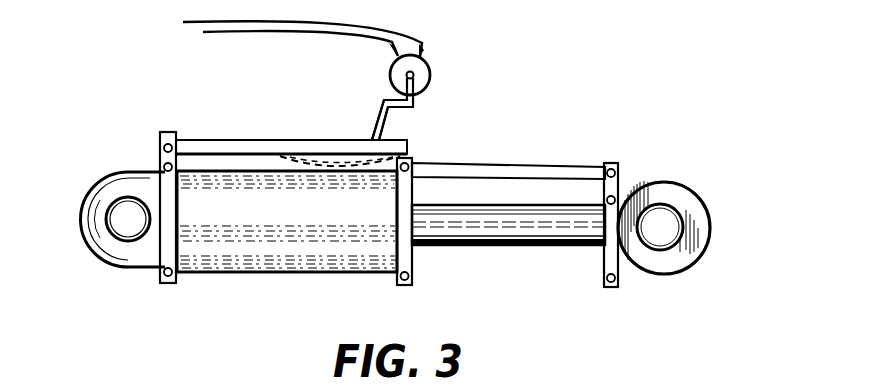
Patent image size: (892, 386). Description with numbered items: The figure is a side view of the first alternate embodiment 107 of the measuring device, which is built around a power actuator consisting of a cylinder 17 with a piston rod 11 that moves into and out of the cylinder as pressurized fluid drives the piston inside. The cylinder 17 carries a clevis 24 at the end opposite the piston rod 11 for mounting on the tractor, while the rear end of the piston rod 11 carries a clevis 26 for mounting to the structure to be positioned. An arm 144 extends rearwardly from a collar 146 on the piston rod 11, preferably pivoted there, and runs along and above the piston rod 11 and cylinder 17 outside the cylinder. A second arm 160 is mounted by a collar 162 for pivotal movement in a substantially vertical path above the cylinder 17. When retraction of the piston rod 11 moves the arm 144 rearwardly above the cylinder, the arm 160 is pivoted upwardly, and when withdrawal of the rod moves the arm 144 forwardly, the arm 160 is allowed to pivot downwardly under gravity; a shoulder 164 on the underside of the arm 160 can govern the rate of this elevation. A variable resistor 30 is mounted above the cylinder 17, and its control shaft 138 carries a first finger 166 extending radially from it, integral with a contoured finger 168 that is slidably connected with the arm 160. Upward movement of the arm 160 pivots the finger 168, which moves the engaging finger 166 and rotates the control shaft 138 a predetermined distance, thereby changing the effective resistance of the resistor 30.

The first alternate embodiment of the measuring device 107 is at (550, 102).
The cylinder 17 is at (346, 274).
The clevis 24 is at (106, 224).
The collar 162 is at (158, 152).
The second arm 160 is at (252, 140).
The shoulder 164 is at (341, 162).
The arm 144 is at (573, 163).
The piston rod 11 is at (554, 246).
The collar 146 is at (618, 186).
The clevis 26 is at (680, 226).
The variable resistor 30 is at (428, 62).
The control shaft 138 is at (414, 74).
The first finger 166 is at (414, 86).
The finger 168 is at (409, 108).